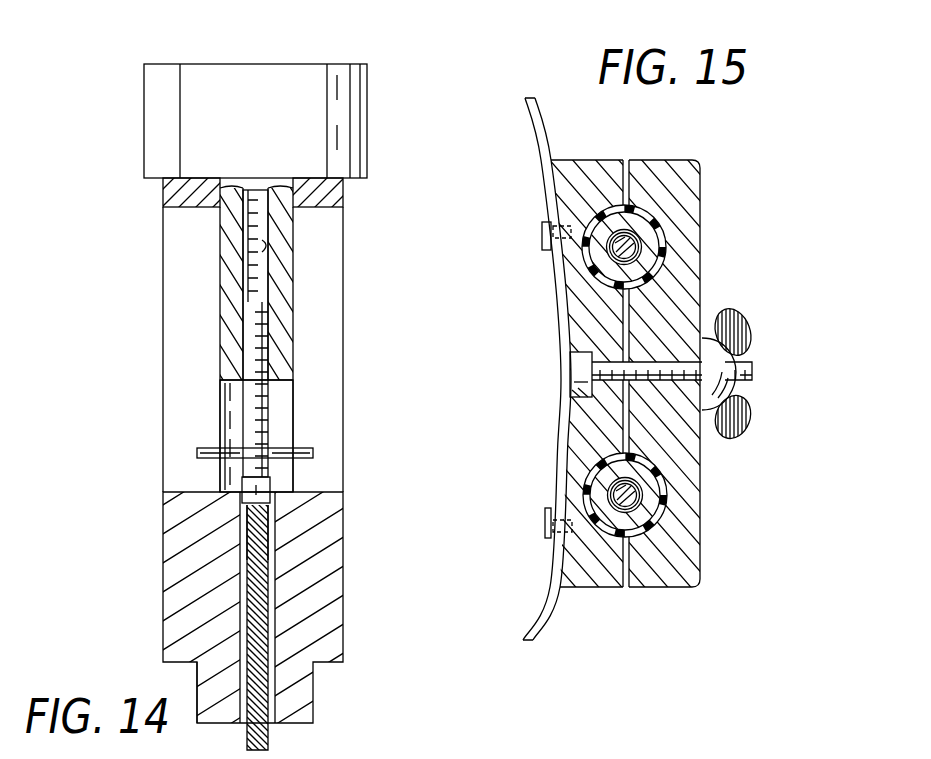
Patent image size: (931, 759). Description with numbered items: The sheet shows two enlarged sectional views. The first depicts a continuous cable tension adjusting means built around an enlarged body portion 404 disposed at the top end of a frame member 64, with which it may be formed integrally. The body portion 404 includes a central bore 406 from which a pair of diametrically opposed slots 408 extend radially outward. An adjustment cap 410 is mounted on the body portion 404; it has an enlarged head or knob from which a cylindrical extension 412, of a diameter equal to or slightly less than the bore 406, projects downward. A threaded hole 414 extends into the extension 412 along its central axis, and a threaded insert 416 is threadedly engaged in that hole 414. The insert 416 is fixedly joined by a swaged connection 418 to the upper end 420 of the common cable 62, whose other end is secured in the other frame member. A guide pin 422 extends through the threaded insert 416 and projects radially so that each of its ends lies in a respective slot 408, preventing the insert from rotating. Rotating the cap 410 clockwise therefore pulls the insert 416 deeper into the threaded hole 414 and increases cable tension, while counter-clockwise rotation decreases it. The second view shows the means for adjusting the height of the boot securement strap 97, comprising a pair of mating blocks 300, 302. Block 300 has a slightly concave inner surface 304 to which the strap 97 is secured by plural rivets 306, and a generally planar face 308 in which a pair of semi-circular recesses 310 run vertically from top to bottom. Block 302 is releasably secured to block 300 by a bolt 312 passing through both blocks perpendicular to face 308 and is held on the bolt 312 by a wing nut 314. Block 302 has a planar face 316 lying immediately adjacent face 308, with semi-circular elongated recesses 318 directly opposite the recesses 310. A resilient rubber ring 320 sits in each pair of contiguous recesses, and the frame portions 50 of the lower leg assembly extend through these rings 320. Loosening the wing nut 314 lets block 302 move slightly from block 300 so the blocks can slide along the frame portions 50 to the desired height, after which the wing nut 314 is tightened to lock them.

In FIG. 14, the adjustment cap 410 is at (343, 152).
In FIG. 14, the threaded hole 414 is at (270, 247).
In FIG. 14, the cylindrical extension 412 is at (285, 288).
In FIG. 14, the threaded insert 416 is at (263, 337).
In FIG. 14, the slots 408 is at (330, 362).
In FIG. 14, the central bore 406 is at (282, 418).
In FIG. 14, the guide pin 422 is at (198, 453).
In FIG. 14, the swaged connection 418 is at (270, 490).
In FIG. 14, the upper end of the common cable 420 is at (267, 527).
In FIG. 14, the body portion 404 is at (332, 555).
In FIG. 14, the common cable 62 is at (260, 643).
In FIG. 15, the common cable 62 is at (630, 240).
In FIG. 14, the frame member 64 is at (300, 699).
In FIG. 15, the block 300 is at (608, 587).
In FIG. 15, the block 302 is at (697, 557).
In FIG. 15, the concave inner surface 304 is at (570, 452).
In FIG. 15, the rivets 306 is at (548, 232).
In FIG. 15, the planar face 308 is at (572, 353).
In FIG. 15, the semi-circular recesses 310 is at (587, 250).
In FIG. 15, the bolt 312 is at (745, 362).
In FIG. 15, the wing nut 314 is at (740, 405).
In FIG. 15, the planar face 316 is at (623, 337).
In FIG. 15, the semi-circular elongated recesses 318 is at (650, 240).
In FIG. 15, the ring 320 is at (641, 210).
In FIG. 15, the frame portions 50 is at (582, 268).
In FIG. 15, the boot securement strap 97 is at (545, 575).